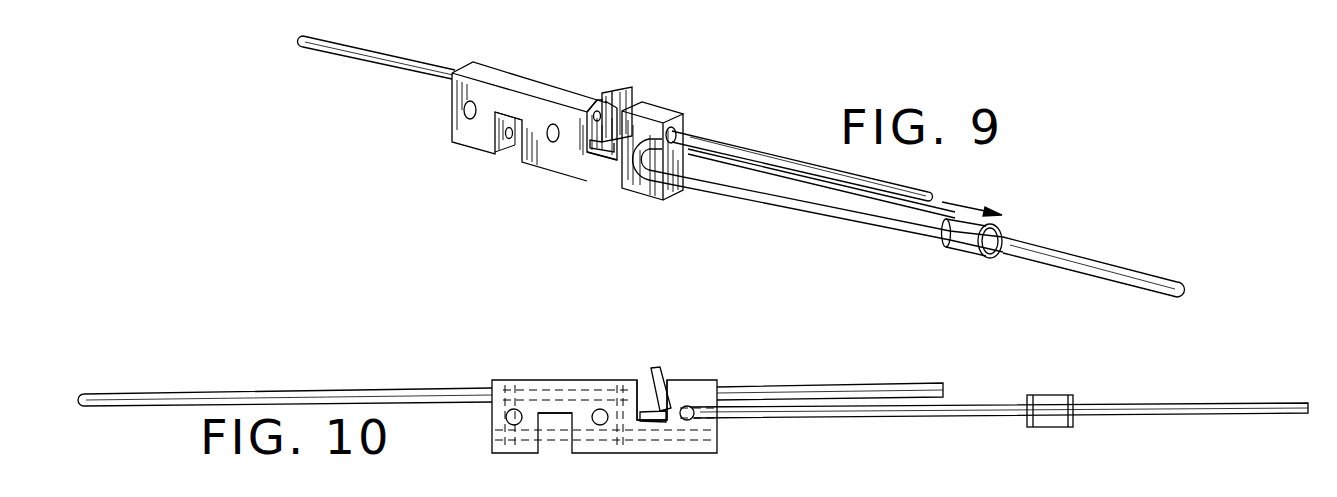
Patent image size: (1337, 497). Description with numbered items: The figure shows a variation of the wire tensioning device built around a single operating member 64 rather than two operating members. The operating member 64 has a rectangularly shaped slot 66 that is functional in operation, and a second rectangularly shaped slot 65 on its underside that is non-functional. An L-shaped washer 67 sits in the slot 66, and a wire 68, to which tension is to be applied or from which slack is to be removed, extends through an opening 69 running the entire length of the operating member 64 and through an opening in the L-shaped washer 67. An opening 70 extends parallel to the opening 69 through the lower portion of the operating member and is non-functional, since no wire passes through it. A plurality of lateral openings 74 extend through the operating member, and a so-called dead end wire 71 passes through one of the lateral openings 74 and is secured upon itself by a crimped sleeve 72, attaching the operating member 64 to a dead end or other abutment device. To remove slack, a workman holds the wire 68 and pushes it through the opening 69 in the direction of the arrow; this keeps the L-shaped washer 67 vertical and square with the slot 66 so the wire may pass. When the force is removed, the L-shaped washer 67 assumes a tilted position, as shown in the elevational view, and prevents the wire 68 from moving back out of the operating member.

In FIG. 9, the operating member 64 is at (530, 103).
In FIG. 10, the operating member 64 is at (553, 385).
In FIG. 9, the second rectangularly shaped slot 65 is at (518, 153).
In FIG. 10, the second rectangularly shaped slot 65 is at (553, 433).
In FIG. 9, the rectangularly shaped slot 66 is at (590, 126).
In FIG. 10, the rectangularly shaped slot 66 is at (645, 378).
In FIG. 9, the L-shaped washer 67 is at (625, 93).
In FIG. 10, the L-shaped washer 67 is at (655, 370).
In FIG. 9, the wire 68 is at (342, 52).
In FIG. 10, the wire 68 is at (170, 398).
In FIG. 9, the opening 69 is at (680, 128).
In FIG. 10, the opening 69 is at (830, 391).
In FIG. 9, the opening 70 is at (505, 134).
In FIG. 9, the dead end wire 71 is at (772, 200).
In FIG. 10, the dead end wire 71 is at (915, 412).
In FIG. 9, the crimped sleeve 72 is at (962, 236).
In FIG. 10, the crimped sleeve 72 is at (1048, 398).
In FIG. 9, the lateral openings 74 is at (462, 108).
In FIG. 10, the lateral openings 74 is at (513, 408).